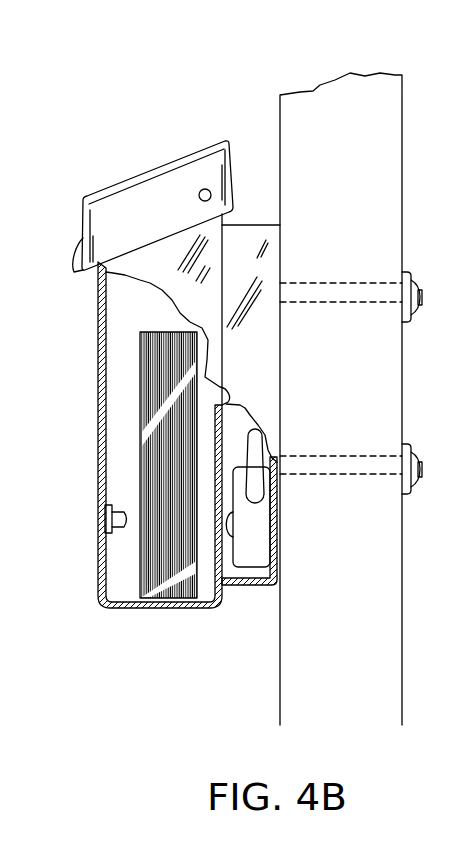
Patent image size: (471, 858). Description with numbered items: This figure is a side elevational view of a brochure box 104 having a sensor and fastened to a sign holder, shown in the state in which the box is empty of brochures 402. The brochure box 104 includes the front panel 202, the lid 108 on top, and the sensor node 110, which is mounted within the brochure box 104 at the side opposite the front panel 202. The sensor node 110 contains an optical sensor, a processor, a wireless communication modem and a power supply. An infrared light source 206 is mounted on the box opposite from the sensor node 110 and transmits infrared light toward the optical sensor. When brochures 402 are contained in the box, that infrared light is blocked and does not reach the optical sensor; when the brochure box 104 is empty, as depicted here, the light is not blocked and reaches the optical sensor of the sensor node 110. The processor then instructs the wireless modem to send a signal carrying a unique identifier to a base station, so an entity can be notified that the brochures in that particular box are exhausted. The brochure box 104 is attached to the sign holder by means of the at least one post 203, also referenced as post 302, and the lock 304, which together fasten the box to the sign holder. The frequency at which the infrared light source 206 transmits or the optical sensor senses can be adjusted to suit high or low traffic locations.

The brochure box 104 is at (156, 411).
The lid 108 is at (82, 222).
The sensor node 110 is at (255, 557).
The front panel 202 is at (97, 577).
The post 203 is at (322, 85).
The infrared light source 206 is at (110, 520).
The post 302 is at (329, 462).
The lock 304 is at (410, 493).
The brochures 402 is at (142, 367).